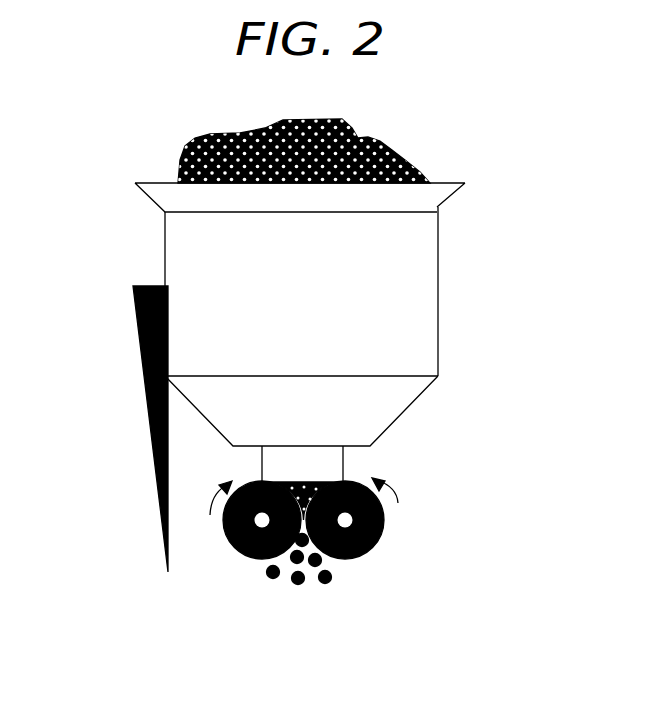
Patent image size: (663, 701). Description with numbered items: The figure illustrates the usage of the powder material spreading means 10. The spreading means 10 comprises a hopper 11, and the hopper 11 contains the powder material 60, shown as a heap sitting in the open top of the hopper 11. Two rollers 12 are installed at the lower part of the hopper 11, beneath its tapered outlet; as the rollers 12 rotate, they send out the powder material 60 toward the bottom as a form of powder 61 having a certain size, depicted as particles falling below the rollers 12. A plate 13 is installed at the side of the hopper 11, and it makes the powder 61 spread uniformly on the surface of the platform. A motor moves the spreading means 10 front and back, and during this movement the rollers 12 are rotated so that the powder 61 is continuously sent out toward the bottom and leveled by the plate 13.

The powder material spreading means 10 is at (344, 314).
The hopper 11 is at (440, 271).
The rollers 12 is at (385, 528).
The plate 13 is at (140, 333).
The powder material 60 is at (358, 138).
The powder 61 is at (332, 582).